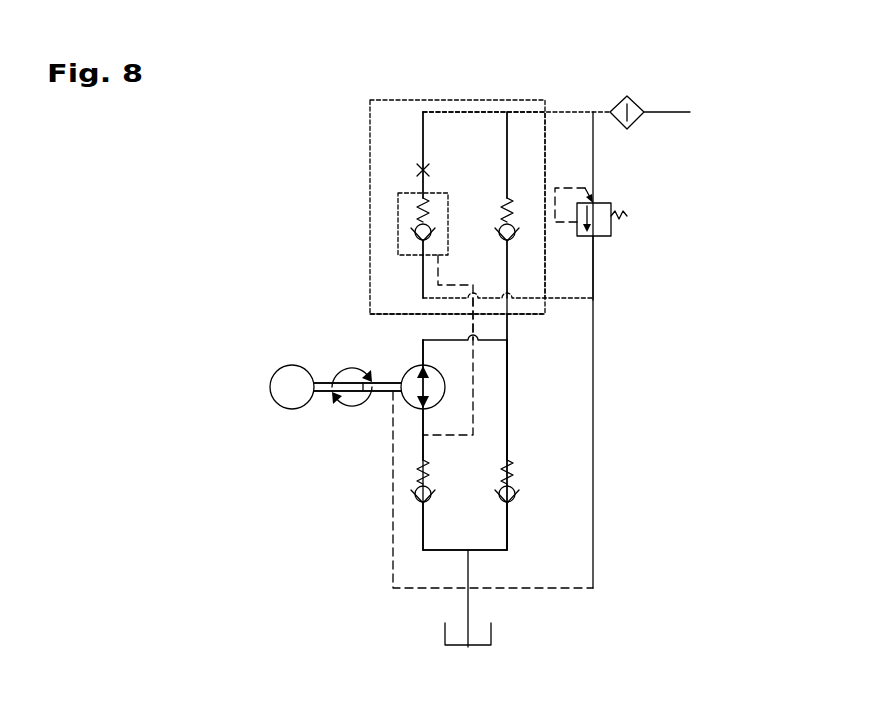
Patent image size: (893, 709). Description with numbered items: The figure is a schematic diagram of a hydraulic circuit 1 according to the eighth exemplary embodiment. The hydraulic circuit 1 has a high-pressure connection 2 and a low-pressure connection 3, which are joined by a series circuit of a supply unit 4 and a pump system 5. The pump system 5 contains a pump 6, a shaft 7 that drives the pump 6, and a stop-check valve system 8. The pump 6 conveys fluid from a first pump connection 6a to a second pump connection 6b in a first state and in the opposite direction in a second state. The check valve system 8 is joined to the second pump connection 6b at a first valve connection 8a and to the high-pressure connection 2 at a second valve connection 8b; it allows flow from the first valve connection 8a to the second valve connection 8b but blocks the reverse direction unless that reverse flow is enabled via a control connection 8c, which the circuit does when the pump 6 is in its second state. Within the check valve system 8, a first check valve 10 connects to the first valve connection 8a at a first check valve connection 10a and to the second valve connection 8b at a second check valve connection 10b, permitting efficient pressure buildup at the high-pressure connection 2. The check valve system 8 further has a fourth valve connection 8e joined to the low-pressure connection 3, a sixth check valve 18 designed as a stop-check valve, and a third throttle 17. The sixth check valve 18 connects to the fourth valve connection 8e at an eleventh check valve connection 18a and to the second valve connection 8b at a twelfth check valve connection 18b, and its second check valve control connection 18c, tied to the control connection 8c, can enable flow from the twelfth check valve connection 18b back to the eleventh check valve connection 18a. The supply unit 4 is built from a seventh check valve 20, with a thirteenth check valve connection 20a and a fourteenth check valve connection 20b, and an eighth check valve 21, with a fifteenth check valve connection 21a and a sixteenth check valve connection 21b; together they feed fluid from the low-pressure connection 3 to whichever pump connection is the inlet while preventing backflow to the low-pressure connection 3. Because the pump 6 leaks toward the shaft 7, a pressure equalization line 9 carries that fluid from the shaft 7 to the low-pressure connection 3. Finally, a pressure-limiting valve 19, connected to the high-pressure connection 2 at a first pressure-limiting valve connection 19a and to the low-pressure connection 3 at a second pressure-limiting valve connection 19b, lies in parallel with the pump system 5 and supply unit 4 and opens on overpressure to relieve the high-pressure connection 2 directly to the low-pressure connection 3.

The hydraulic circuit 1 is at (195, 158).
The high-pressure connection 2 is at (660, 113).
The low-pressure connection 3 is at (470, 612).
The supply unit 4 is at (515, 563).
The pump system 5 is at (375, 448).
The pump 6 is at (405, 403).
The first pump connection 6a is at (430, 409).
The second pump connection 6b is at (430, 366).
The shaft 7 is at (318, 393).
The check valve system 8 is at (370, 148).
The first valve connection 8a is at (508, 318).
The second valve connection 8b is at (545, 112).
The control connection 8c is at (473, 312).
The fourth valve connection 8e is at (546, 314).
The pressure equalization line 9 is at (385, 573).
The first check valve 10 is at (516, 238).
The first check valve connection 10a is at (508, 198).
The second check valve connection 10b is at (515, 247).
The third throttle 17 is at (420, 172).
The sixth check valve 18 is at (398, 222).
The eleventh check valve connection 18a is at (423, 254).
The twelfth check valve connection 18b is at (430, 192).
The second check valve control connection 18c is at (433, 268).
The pressure-limiting valve 19 is at (612, 228).
The first pressure-limiting valve connection 19a is at (598, 200).
The second pressure-limiting valve connection 19b is at (600, 242).
The seventh check valve 20 is at (418, 498).
The thirteenth check valve connection 20a is at (423, 504).
The fourteenth check valve connection 20b is at (420, 462).
The eighth check valve 21 is at (516, 493).
The fifteenth check valve connection 21a is at (510, 502).
The sixteenth check valve connection 21b is at (512, 462).